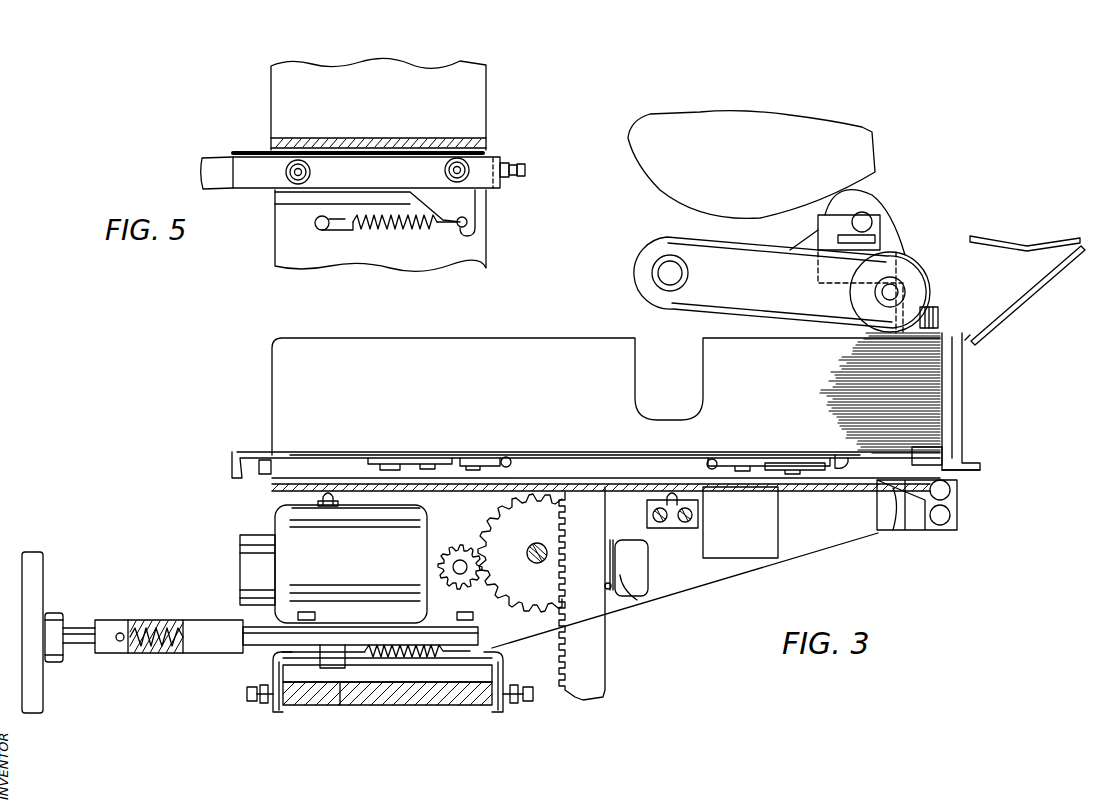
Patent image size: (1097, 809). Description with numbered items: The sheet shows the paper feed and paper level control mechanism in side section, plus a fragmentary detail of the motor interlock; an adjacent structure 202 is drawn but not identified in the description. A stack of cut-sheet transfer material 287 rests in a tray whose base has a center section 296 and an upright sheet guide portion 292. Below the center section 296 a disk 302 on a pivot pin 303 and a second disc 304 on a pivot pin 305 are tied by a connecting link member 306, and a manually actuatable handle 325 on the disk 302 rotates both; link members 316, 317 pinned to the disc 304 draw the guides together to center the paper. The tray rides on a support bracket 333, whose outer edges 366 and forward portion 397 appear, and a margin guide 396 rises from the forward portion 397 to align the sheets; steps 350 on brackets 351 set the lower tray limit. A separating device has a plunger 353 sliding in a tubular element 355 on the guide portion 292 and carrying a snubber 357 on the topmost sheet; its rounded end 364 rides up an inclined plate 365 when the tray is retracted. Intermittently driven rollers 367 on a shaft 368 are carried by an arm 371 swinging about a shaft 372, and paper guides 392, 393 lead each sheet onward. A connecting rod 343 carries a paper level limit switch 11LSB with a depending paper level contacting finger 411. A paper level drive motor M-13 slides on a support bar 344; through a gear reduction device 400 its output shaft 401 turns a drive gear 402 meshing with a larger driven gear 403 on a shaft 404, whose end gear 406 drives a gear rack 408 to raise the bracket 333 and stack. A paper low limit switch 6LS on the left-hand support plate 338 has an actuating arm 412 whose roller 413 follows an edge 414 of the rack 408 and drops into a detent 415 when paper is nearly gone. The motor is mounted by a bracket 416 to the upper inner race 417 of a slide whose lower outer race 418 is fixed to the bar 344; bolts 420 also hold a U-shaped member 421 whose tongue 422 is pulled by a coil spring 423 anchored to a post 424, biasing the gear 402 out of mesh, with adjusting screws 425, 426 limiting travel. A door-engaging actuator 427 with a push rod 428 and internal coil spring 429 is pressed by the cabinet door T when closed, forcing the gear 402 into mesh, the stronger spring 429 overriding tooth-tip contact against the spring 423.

In FIG. 3, the frame portion 202 is at (876, 142).
In FIG. 3, the connecting rod 343 is at (877, 198).
In FIG. 3, the paper level limit switch 11LSB is at (880, 220).
In FIG. 3, the arm 371 is at (660, 238).
In FIG. 3, the shaft 372 is at (655, 272).
In FIG. 3, the intermittently driven rollers 367 is at (905, 262).
In FIG. 3, the shaft 368 is at (898, 288).
In FIG. 3, the paper level contacting finger 411 is at (912, 300).
In FIG. 3, the paper guide 392 is at (1028, 246).
In FIG. 3, the paper guide 393 is at (1035, 292).
In FIG. 3, the plunger 353 is at (940, 326).
In FIG. 3, the snubber 357 is at (968, 336).
In FIG. 3, the upright sheet guide portion 292 is at (474, 338).
In FIG. 3, the cut-sheet transfer material 287 is at (935, 393).
In FIG. 3, the margin guide 396 is at (950, 428).
In FIG. 3, the tubular element 355 is at (935, 458).
In FIG. 3, the forward portion 397 is at (978, 470).
In FIG. 3, the center section 296 is at (312, 452).
In FIG. 3, the manually actuatable handle 325 is at (264, 474).
In FIG. 3, the support bracket 333 is at (805, 478).
In FIG. 3, the pivot pin 303 is at (437, 458).
In FIG. 3, the disk 302 is at (500, 458).
In FIG. 3, the connecting link member 306 is at (598, 452).
In FIG. 3, the second disc 304 is at (712, 458).
In FIG. 3, the pivot pin 305 is at (783, 458).
In FIG. 3, the link member 317 is at (836, 458).
In FIG. 3, the paper level drive motor M-13 is at (276, 524).
In FIG. 3, the gear reduction device 400 is at (428, 510).
In FIG. 3, the steps 350 is at (330, 506).
In FIG. 3, the brackets 351 is at (670, 528).
In FIG. 3, the link member 316 is at (740, 522).
In FIG. 3, the outer edges 366 is at (812, 492).
In FIG. 3, the drive gear 402 is at (460, 547).
In FIG. 3, the output shaft 401 is at (442, 580).
In FIG. 3, the shaft 404 is at (537, 543).
In FIG. 3, the driven gear 403 is at (517, 590).
In FIG. 3, the gear rack 408 is at (590, 645).
In FIG. 3, the gear 406 is at (565, 553).
In FIG. 3, the roller 413 is at (605, 612).
In FIG. 3, the edge 414 is at (605, 665).
In FIG. 3, the detent 415 is at (600, 698).
In FIG. 3, the paper low limit switch 6LS is at (650, 582).
In FIG. 3, the actuating arm 412 is at (637, 600).
In FIG. 3, the left-hand support plate 338 is at (753, 580).
In FIG. 3, the inclined plates 365 is at (908, 530).
In FIG. 3, the rounded ends 364 is at (945, 493).
In FIG. 3, the cabinet door T is at (44, 560).
In FIG. 3, the push rod 428 is at (80, 628).
In FIG. 3, the door-engaging actuator 427 is at (210, 620).
In FIG. 3, the coil spring 429 is at (150, 653).
In FIG. 3, the bracket 416 is at (292, 647).
In FIG. 3, the bolts 420 is at (307, 612).
In FIG. 5, the U-shaped member 421 is at (496, 158).
In FIG. 3, the U-shaped member 421 is at (350, 648).
In FIG. 5, the coil spring 423 is at (380, 228).
In FIG. 3, the coil spring 423 is at (398, 645).
In FIG. 3, the upper inner race 417 is at (275, 672).
In FIG. 3, the lower outer race 418 is at (283, 686).
In FIG. 5, the support bar 344 is at (486, 240).
In FIG. 3, the support bar 344 is at (420, 706).
In FIG. 5, the post 424 is at (316, 231).
In FIG. 3, the post 424 is at (346, 690).
In FIG. 3, the adjusting screw 425 is at (252, 701).
In FIG. 3, the adjusting screw 426 is at (530, 701).
In FIG. 5, the tongue 422 is at (467, 218).